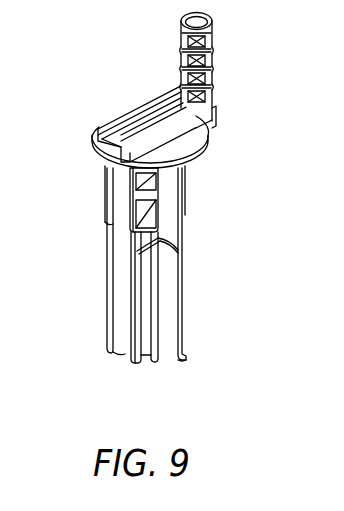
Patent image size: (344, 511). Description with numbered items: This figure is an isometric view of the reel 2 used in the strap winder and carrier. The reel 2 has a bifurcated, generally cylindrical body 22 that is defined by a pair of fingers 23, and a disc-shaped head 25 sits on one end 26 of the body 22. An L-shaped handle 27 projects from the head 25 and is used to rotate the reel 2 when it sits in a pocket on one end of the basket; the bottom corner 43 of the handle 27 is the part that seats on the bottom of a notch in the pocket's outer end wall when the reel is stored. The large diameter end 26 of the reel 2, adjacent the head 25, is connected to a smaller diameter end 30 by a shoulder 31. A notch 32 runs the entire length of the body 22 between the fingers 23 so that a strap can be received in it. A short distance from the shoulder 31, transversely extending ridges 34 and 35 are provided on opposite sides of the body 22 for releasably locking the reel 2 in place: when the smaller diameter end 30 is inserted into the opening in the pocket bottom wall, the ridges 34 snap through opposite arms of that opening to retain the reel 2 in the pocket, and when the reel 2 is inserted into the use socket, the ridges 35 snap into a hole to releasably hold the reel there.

The reel 2 is at (83, 332).
The body 22 is at (180, 277).
The fingers 23 is at (107, 298).
The head 25 is at (116, 112).
The large diameter end 26 is at (182, 188).
The handle 27 is at (213, 63).
The smaller diameter end 30 is at (176, 357).
The shoulder 31 is at (110, 226).
The notch 32 is at (125, 354).
The ridges 34 is at (130, 262).
The ridges 35 is at (180, 257).
The bottom corner 43 is at (212, 120).